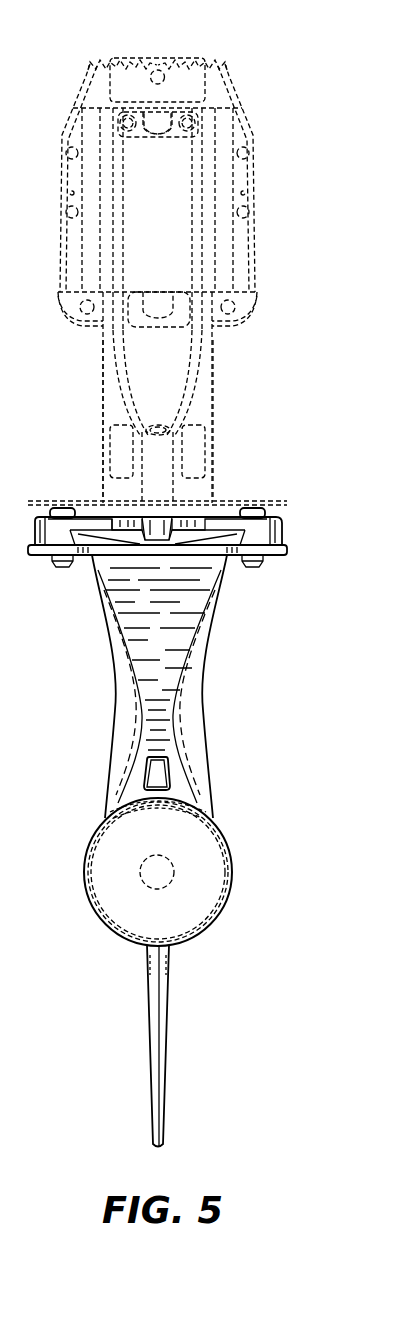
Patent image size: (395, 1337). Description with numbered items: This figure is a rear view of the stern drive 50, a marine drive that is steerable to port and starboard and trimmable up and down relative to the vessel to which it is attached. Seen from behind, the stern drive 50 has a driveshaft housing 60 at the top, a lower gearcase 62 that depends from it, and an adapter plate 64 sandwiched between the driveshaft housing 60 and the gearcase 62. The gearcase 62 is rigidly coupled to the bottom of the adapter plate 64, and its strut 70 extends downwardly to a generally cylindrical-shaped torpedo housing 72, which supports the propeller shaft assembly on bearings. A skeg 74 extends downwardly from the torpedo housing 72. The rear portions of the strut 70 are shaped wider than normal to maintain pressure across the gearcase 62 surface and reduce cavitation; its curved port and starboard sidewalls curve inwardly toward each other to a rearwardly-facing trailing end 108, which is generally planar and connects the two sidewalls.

The stern drive 50 is at (275, 88).
The driveshaft housing 60 is at (90, 370).
The lower gearcase 62 is at (202, 713).
The adapter plate 64 is at (284, 545).
The strut 70 is at (146, 666).
The torpedo housing 72 is at (85, 900).
The skeg 74 is at (152, 1077).
The trailing end 108 is at (158, 632).